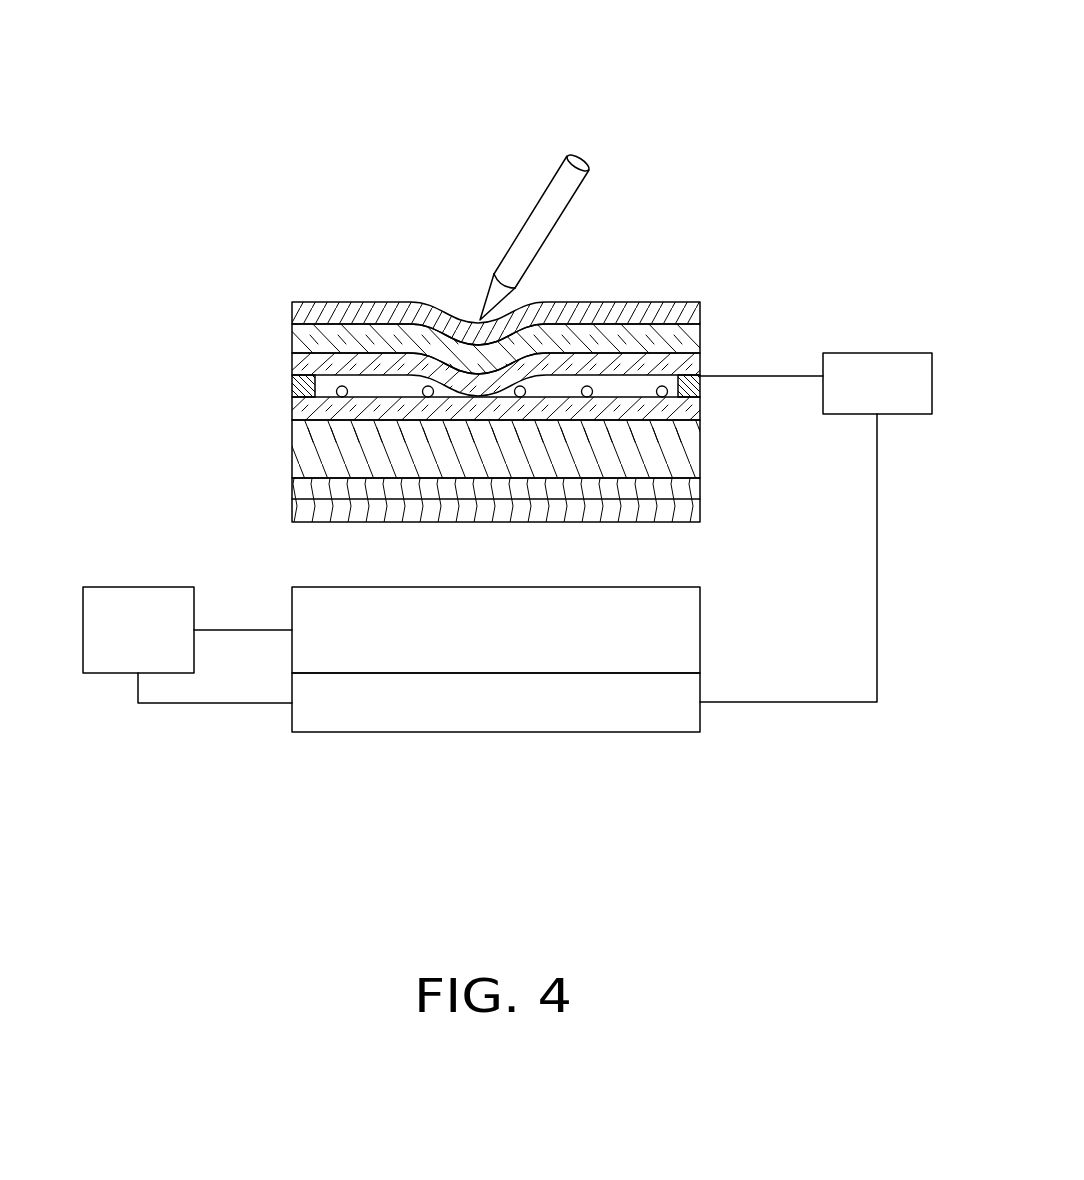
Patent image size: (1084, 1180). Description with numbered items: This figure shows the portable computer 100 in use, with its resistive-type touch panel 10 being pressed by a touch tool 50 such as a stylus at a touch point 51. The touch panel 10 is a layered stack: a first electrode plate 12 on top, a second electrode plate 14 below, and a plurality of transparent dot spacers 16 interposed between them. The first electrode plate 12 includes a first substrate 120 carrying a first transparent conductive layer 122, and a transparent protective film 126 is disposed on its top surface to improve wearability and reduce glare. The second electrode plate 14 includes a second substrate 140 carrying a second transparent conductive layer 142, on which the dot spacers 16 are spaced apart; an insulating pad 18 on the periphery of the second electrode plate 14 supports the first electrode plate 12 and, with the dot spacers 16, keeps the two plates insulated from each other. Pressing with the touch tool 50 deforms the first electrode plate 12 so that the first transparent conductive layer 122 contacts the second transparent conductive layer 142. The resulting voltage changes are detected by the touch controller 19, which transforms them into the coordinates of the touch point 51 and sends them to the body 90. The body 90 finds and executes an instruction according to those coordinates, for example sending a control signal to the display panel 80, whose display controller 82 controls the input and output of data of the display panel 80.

The portable computer 100 is at (338, 60).
The touch panel 10 is at (149, 276).
The first electrode plate 12 is at (199, 312).
The first substrate 120 is at (296, 328).
The first transparent conductive layer 122 is at (296, 359).
The transparent protective film 126 is at (293, 302).
The second electrode plate 14 is at (199, 399).
The second substrate 140 is at (300, 466).
The second transparent conductive layer 142 is at (298, 407).
The transparent dot spacers 16 is at (590, 398).
The insulating pad 18 is at (702, 391).
The touch controller 19 is at (910, 368).
The touch tool 50 is at (550, 204).
The touch point 51 is at (478, 320).
The display panel 80 is at (300, 608).
The display controller 82 is at (124, 600).
The body 90 is at (605, 722).